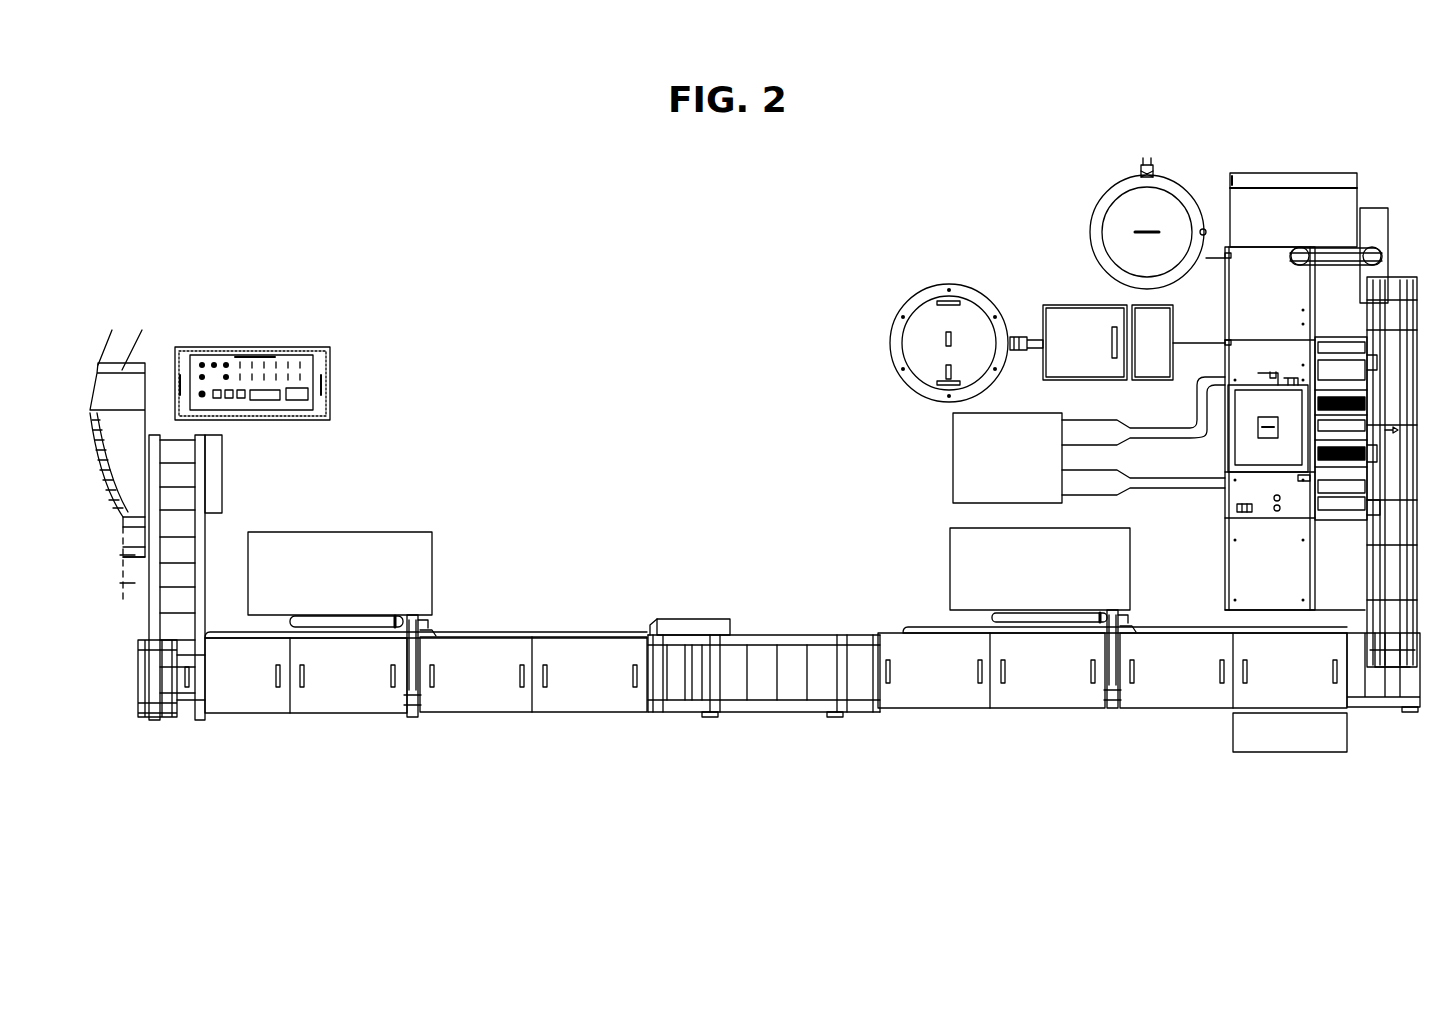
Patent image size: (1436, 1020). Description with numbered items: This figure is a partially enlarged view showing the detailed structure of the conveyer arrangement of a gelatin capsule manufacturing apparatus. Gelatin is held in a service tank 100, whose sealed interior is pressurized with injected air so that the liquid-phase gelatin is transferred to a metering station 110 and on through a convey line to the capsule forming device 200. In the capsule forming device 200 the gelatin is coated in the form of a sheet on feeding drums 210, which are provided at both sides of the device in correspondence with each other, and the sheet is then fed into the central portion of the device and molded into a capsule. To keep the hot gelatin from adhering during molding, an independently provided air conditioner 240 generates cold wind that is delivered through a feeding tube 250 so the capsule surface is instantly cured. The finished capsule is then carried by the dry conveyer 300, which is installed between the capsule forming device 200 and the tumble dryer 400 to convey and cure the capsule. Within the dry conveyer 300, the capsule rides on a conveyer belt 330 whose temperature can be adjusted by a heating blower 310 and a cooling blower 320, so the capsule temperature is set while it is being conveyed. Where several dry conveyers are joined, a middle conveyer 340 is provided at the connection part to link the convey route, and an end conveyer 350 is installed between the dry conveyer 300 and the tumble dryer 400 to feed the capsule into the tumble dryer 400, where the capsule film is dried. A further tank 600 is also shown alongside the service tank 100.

The service tank 100 is at (940, 283).
The metering station 110 is at (1087, 303).
The capsule forming device 200 is at (1298, 173).
The feeding drums 210 is at (1337, 295).
The air conditioner 240 is at (963, 455).
The feeding tube 250 is at (1163, 432).
The dry conveyer 300 is at (742, 670).
The heating blower 310 is at (367, 590).
The cooling blower 320 is at (982, 587).
The conveyer belt 330 is at (1163, 712).
The middle conveyer 340 is at (768, 692).
The end conveyer 350 is at (190, 595).
The tumble dryer 400 is at (123, 367).
The second tank 600 is at (1107, 187).